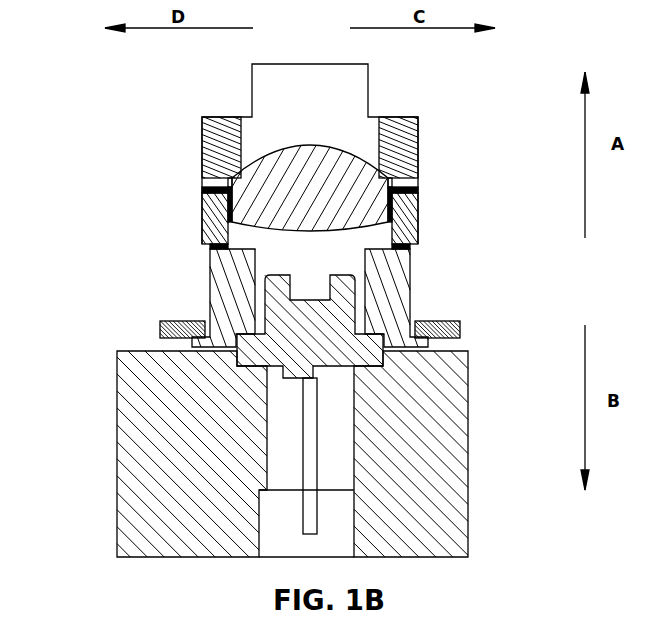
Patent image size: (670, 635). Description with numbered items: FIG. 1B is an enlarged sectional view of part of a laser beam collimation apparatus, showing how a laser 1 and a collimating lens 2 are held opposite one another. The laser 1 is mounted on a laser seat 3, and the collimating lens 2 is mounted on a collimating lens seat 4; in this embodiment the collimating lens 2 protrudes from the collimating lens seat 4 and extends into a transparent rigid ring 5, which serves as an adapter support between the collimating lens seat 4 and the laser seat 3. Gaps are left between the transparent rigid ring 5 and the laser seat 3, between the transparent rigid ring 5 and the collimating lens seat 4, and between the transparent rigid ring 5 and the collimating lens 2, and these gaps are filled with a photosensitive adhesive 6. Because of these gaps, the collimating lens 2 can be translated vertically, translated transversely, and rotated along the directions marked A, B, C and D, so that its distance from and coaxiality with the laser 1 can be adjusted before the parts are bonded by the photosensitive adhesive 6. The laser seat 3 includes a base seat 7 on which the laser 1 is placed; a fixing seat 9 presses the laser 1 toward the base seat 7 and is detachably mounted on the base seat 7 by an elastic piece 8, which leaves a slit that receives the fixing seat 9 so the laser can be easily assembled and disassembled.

The laser 1 is at (358, 337).
The collimating lens 2 is at (330, 183).
The laser seat 3 is at (475, 465).
The collimating lens seat 4 is at (223, 143).
The transparent rigid ring 5 is at (215, 205).
The photosensitive adhesive 6 is at (206, 246).
The base seat 7 is at (173, 416).
The elastic piece 8 is at (160, 328).
The fixing seat 9 is at (224, 290).